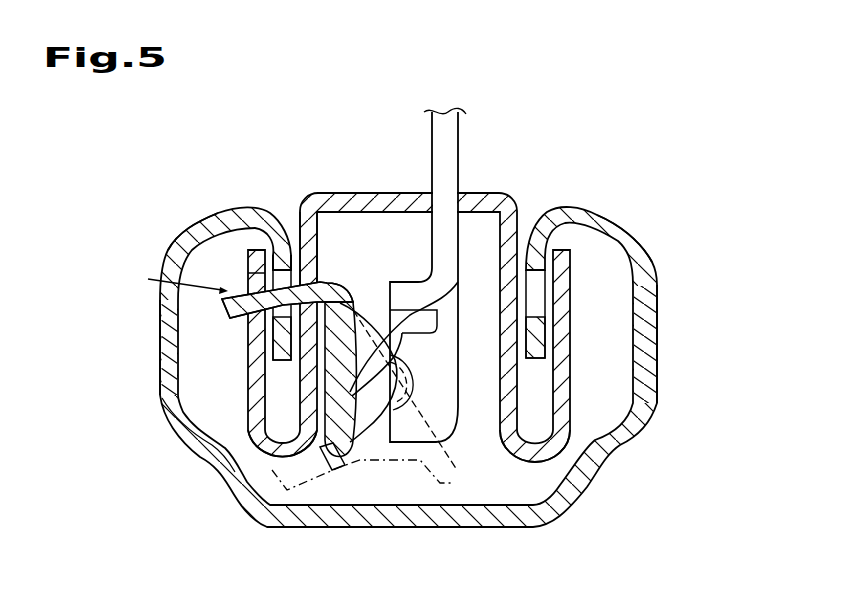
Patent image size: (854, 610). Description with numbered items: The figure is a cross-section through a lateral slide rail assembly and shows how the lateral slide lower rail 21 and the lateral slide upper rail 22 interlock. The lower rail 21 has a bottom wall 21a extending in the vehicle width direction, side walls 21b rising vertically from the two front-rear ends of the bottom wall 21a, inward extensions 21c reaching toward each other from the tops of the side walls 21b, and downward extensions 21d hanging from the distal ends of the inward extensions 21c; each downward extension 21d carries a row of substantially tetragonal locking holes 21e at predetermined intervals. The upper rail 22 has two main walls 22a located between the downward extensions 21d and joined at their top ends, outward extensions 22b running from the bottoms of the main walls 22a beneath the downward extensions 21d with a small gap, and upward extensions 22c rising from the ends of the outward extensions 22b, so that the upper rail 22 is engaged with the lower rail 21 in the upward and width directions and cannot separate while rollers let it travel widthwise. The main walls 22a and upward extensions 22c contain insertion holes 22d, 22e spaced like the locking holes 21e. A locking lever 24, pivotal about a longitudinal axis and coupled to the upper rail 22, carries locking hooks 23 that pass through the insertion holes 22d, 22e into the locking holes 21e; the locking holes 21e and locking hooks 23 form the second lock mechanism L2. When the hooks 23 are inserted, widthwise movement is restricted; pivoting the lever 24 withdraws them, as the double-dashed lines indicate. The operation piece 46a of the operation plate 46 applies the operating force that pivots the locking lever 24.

The lateral slide lower rail 21 is at (642, 228).
The bottom wall 21a is at (401, 528).
The side walls 21b is at (159, 358).
The inward extensions 21c is at (200, 237).
The downward extensions 21d is at (278, 362).
The locking holes 21e is at (288, 262).
The lateral slide upper rail 22 is at (499, 190).
The main walls 22a is at (386, 193).
The outward extensions 22b is at (262, 463).
The upward extensions 22c is at (249, 250).
The insertion holes 22d is at (322, 278).
The insertion holes 22e is at (240, 283).
The locking hooks 23 is at (224, 309).
The locking lever 24 is at (358, 277).
The operation plate 46 is at (459, 120).
The operation piece 46a is at (400, 284).
The second lock mechanism L2 is at (168, 281).